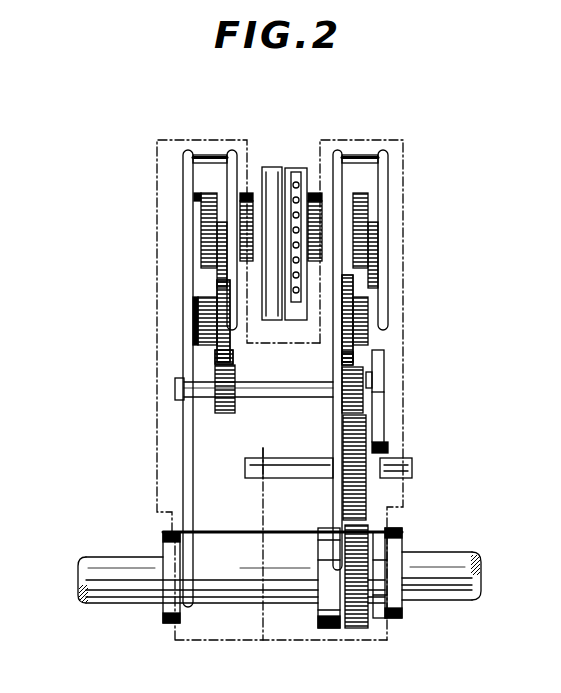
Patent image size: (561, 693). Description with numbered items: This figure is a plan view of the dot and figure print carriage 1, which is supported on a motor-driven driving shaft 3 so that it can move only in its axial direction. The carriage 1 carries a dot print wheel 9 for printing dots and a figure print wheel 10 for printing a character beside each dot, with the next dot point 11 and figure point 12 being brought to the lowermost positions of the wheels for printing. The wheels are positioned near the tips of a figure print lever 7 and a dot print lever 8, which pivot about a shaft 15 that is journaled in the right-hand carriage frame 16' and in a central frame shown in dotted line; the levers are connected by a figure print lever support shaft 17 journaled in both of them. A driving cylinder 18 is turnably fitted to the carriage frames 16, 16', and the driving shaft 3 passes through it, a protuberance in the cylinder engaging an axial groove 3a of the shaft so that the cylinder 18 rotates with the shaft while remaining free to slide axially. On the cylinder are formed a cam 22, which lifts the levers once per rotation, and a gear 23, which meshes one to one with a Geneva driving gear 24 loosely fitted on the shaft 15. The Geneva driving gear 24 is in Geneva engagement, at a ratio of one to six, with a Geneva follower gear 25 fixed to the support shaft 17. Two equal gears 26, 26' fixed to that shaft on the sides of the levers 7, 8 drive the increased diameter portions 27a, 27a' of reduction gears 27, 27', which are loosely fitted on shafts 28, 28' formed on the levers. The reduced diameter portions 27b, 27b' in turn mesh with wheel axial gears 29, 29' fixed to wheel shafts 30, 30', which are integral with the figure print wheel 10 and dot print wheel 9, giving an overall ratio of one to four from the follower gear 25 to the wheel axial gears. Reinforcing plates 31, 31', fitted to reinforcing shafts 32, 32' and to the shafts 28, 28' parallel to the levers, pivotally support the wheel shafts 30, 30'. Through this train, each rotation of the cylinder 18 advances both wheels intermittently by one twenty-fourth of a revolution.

The dot and figure print carriage 1 is at (428, 250).
The driving shaft 3 is at (443, 563).
The groove 3a is at (446, 592).
The figure print lever 7 is at (183, 176).
The dot print lever 8 is at (338, 150).
The dot print wheel 9 is at (292, 170).
The figure print wheel 10 is at (265, 170).
The dot point 11 is at (300, 172).
The figure point 12 is at (276, 170).
The shaft 15 is at (245, 478).
The carriage frame 16 is at (252, 390).
The carriage frame 16' is at (391, 390).
The figure print lever support shaft 17 is at (280, 386).
The driving cylinder 18 is at (392, 530).
The cam 22 is at (323, 590).
The gear 23 is at (360, 615).
The Geneva driving gear 24 is at (368, 432).
The Geneva follower gear 25 is at (385, 372).
The gear 26 is at (229, 407).
The gear 26' is at (325, 410).
The reduction gear 27 is at (172, 335).
The increased diameter portion 27a is at (165, 386).
The reduced diameter portion 27b is at (166, 321).
The reduction gear 27' is at (423, 320).
The increased diameter portion 27a' is at (306, 361).
The reduced diameter portion 27b' is at (437, 300).
The shaft 28 is at (163, 321).
The shaft 28' is at (427, 311).
The wheel axial gear 29 is at (165, 230).
The wheel axial gear 29' is at (404, 222).
The wheel shaft 30 is at (169, 255).
The wheel shaft 30' is at (410, 248).
The reinforcing plate 31 is at (233, 215).
The reinforcing plate 31' is at (416, 237).
The reinforcing shaft 32 is at (201, 132).
The reinforcing shaft 32' is at (375, 134).